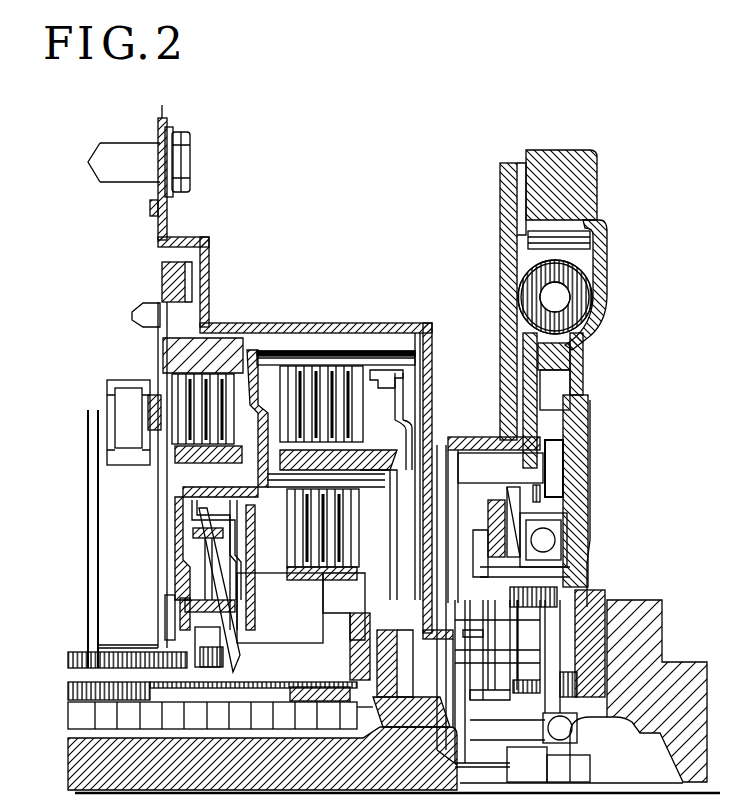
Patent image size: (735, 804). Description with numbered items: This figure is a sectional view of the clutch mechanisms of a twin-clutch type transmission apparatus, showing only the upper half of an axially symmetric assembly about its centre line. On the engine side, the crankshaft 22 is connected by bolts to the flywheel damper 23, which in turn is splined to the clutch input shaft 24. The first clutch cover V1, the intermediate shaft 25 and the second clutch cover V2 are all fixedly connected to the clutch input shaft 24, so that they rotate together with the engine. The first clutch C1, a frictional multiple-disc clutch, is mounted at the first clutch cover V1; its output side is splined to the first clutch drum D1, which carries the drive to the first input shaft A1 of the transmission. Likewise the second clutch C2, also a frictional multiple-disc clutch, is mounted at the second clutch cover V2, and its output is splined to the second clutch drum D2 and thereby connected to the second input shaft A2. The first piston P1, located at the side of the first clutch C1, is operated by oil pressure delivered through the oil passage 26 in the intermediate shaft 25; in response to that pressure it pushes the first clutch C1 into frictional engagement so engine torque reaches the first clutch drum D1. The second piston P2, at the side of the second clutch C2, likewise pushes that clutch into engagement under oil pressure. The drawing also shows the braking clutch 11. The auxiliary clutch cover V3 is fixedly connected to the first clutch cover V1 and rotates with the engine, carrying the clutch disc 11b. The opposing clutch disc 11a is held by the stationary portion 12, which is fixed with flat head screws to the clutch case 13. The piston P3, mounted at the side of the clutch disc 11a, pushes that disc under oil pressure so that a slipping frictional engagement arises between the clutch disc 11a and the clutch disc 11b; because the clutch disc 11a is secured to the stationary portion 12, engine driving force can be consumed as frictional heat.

The clutch case 13 is at (138, 249).
The stationary portion 12 is at (160, 290).
The braking clutch 11 is at (143, 348).
The clutch disc 11a is at (165, 358).
The clutch disc 11b is at (165, 425).
The piston P3 is at (148, 412).
The auxiliary clutch cover V3 is at (185, 462).
The first piston P1 is at (268, 350).
The first clutch cover V1 is at (292, 362).
The first clutch C1 is at (337, 362).
The second clutch C2 is at (355, 452).
The second clutch cover V2 is at (405, 427).
The first clutch drum D1 is at (428, 452).
The second piston P2 is at (262, 583).
The second clutch drum D2 is at (330, 565).
The flywheel damper 23 is at (606, 216).
The crankshaft 22 is at (645, 603).
The clutch input shaft 24 is at (598, 773).
The oil passage 26 is at (95, 665).
The intermediate shaft 25 is at (70, 690).
The second input shaft A2 is at (75, 718).
The first input shaft A1 is at (80, 757).